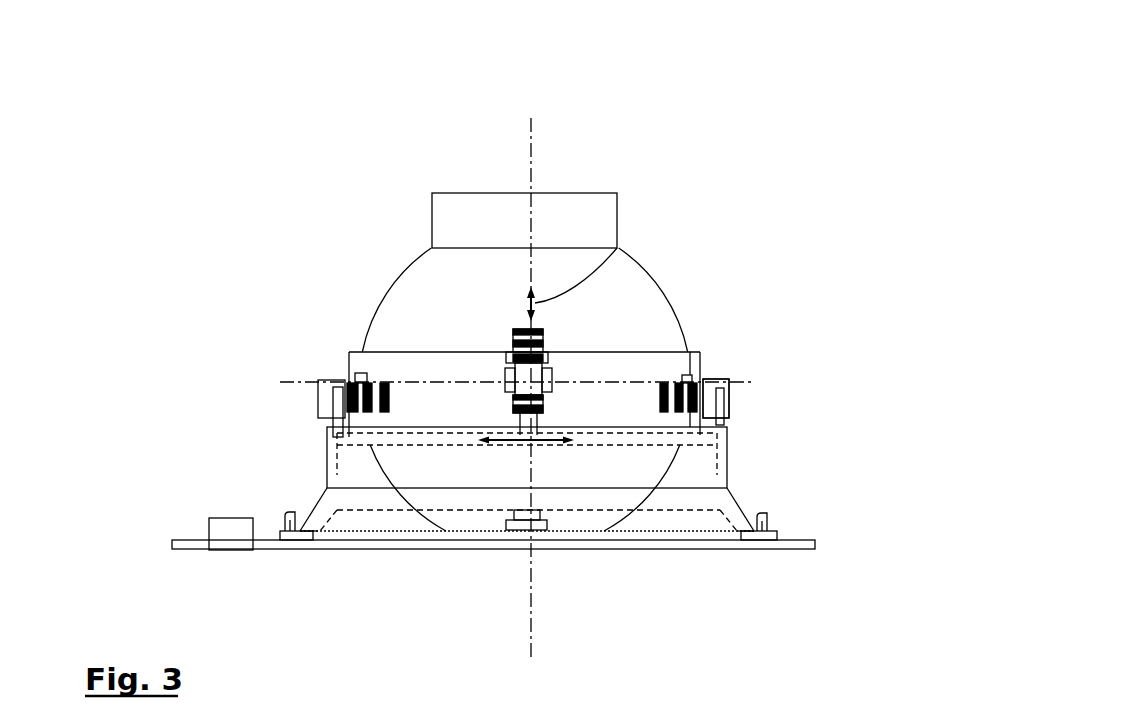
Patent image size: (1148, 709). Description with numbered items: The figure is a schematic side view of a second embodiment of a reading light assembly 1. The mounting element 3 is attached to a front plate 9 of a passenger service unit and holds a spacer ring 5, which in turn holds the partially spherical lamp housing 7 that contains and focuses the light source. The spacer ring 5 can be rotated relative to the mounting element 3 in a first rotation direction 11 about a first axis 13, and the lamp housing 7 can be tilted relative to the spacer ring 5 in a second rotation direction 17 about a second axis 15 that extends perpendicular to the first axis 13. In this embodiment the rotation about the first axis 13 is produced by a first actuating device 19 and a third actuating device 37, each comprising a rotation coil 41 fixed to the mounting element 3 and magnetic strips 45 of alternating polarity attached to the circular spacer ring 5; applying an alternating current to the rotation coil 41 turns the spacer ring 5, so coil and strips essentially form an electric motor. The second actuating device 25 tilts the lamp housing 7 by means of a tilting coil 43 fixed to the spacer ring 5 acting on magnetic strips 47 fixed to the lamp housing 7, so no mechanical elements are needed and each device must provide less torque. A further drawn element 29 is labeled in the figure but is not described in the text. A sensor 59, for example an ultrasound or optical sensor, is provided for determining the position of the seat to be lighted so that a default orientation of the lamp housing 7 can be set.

The reading light assembly 1 is at (303, 256).
The mounting element 3 is at (720, 473).
The spacer ring 5 is at (692, 352).
The lamp housing 7 is at (567, 277).
The front plate 9 is at (815, 544).
The first rotation direction 11 is at (530, 444).
The first axis 13 is at (535, 183).
The second axis 15 is at (744, 378).
The second rotation direction 17 is at (608, 352).
The first actuating device 19 is at (303, 391).
The second actuating device 25 is at (572, 370).
The spring element 29 is at (533, 327).
The third actuating device 37 is at (757, 387).
The rotation coil 41 is at (320, 380).
The tilting coil 43 is at (514, 395).
The magnetic strips 45 is at (347, 381).
The magnetic strips 47 is at (513, 347).
The sensor 59 is at (212, 534).